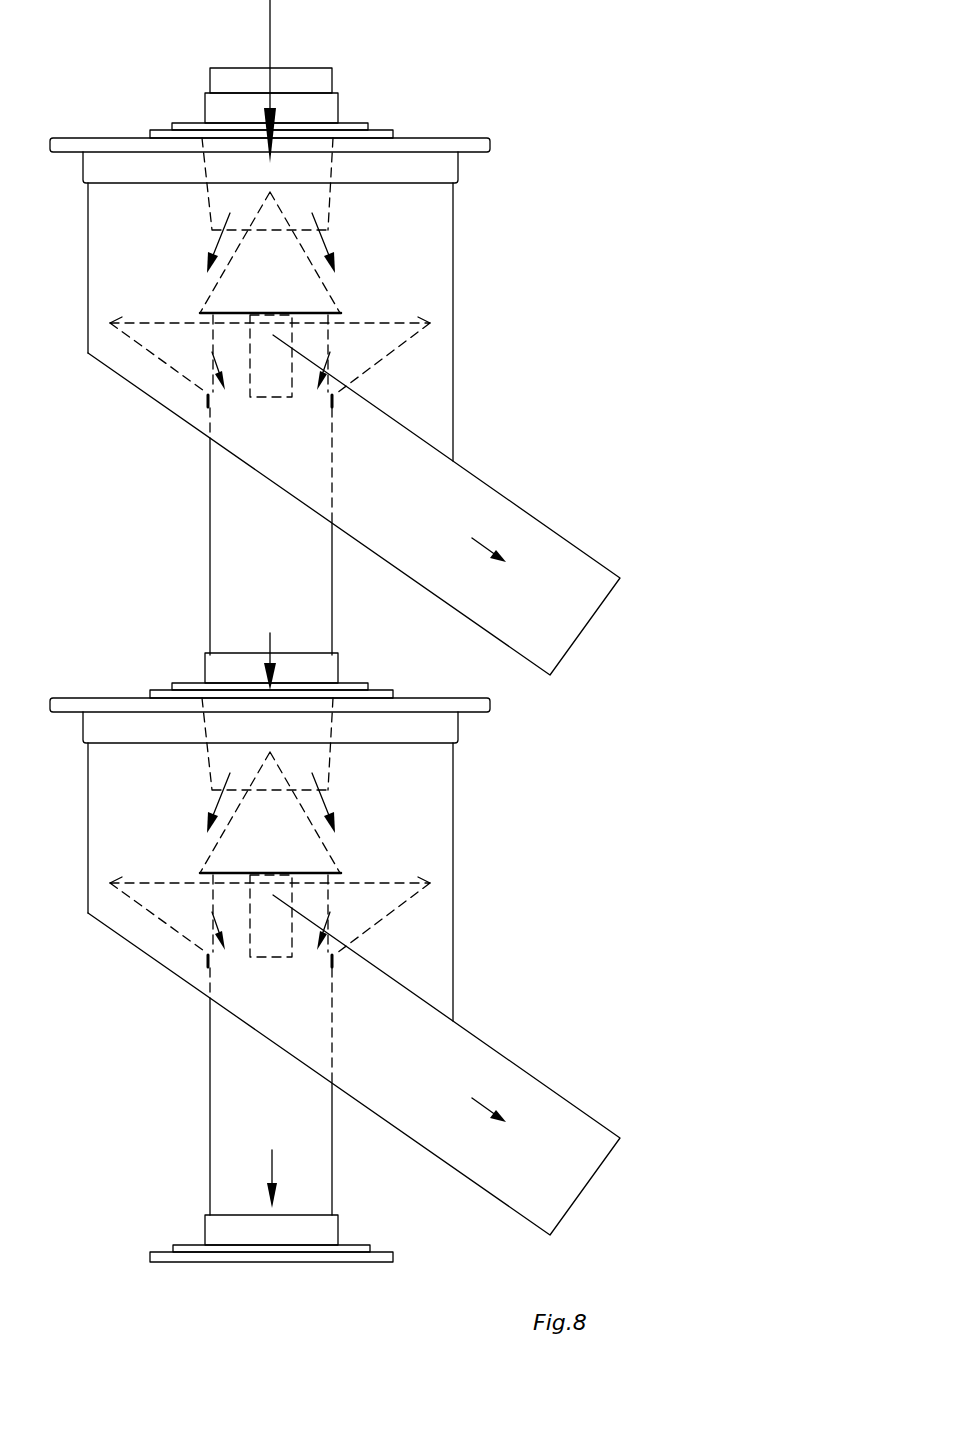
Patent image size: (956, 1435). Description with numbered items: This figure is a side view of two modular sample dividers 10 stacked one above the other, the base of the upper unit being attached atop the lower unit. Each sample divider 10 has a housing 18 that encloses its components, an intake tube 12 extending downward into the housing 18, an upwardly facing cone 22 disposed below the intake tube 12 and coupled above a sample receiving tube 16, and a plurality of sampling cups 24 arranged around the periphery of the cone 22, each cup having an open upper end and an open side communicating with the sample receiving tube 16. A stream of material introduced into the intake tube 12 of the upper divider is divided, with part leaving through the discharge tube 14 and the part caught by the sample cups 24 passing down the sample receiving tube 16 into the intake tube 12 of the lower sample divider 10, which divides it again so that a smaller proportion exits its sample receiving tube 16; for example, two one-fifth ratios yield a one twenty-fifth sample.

The modular sample divider 10 is at (547, 253).
The intake tube 12 is at (287, 68).
The discharge tube 14 is at (557, 542).
The sample receiving tube 16 is at (225, 593).
The housing 18 is at (88, 244).
The cone 22 is at (340, 238).
The sampling cups 24 is at (127, 322).